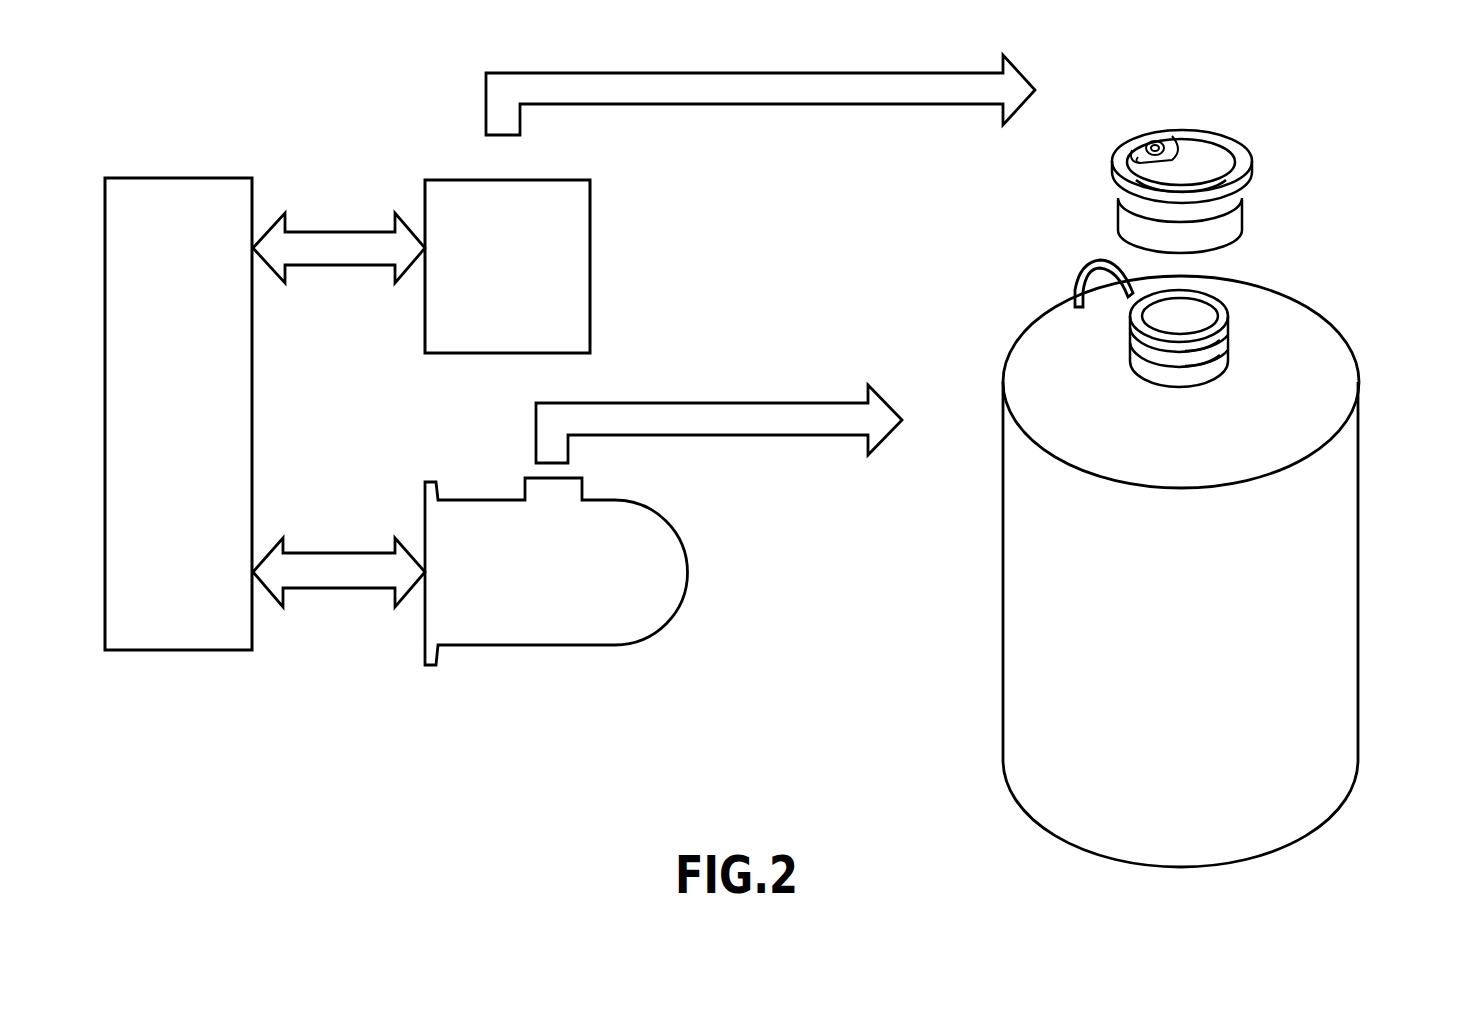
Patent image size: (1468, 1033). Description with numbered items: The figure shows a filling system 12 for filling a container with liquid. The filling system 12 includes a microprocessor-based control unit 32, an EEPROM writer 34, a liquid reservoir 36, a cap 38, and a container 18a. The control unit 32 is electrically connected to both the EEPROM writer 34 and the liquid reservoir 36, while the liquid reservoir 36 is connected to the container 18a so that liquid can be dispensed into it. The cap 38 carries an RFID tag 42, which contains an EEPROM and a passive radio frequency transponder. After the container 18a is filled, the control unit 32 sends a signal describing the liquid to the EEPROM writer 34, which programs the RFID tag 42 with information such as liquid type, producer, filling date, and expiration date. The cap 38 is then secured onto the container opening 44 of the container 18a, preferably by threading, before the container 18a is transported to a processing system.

The filling system 12 is at (348, 92).
The control unit 32 is at (128, 177).
The EEPROM writer 34 is at (590, 210).
The liquid reservoir 36 is at (525, 648).
The cap 38 is at (1216, 166).
The RFID tag 42 is at (1150, 140).
The container opening 44 is at (1262, 318).
The container 18a is at (1362, 520).